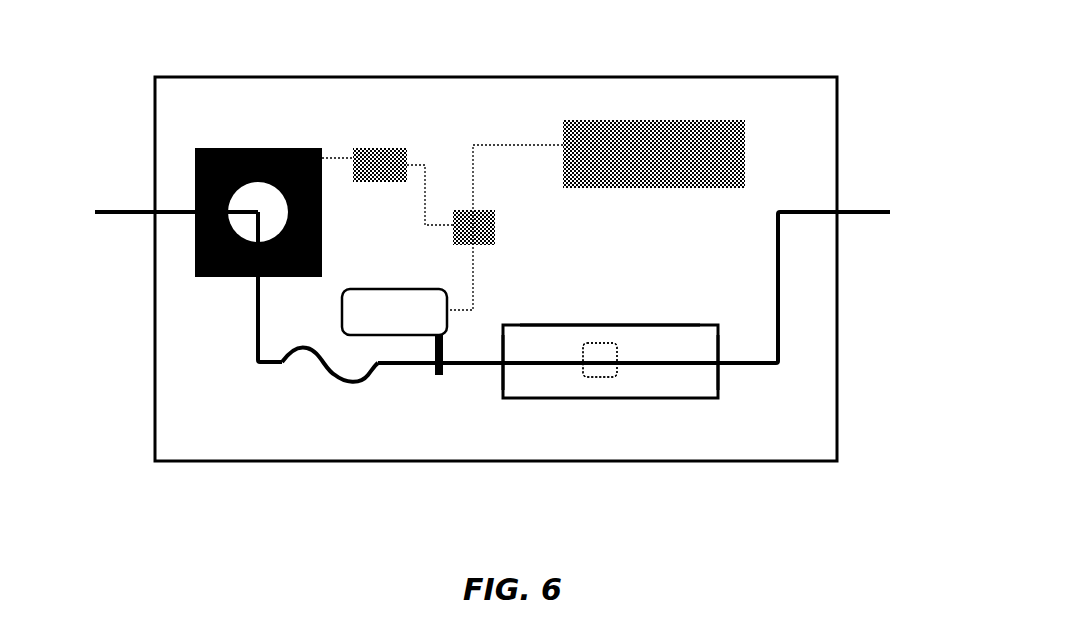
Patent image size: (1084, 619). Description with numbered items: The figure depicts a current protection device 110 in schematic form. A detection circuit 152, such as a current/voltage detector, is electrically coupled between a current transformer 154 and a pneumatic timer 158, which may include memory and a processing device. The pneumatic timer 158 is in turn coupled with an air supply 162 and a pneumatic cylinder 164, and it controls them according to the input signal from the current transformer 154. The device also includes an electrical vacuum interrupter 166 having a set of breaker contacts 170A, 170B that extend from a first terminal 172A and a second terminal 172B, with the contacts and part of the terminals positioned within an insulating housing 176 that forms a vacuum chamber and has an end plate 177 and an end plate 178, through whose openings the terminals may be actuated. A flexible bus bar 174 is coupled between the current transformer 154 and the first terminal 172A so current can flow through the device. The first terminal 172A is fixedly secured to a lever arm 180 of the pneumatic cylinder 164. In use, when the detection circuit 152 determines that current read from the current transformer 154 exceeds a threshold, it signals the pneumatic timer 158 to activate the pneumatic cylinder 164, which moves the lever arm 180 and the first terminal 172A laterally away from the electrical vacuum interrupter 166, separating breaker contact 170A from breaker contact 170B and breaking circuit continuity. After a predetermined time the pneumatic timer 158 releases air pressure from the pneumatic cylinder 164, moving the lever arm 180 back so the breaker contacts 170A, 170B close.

The current protection device 110 is at (263, 71).
The detection circuit 152 is at (383, 148).
The current transformer 154 is at (205, 148).
The pneumatic timer 158 is at (495, 225).
The air supply 162 is at (620, 120).
The pneumatic cylinder 164 is at (385, 292).
The electrical vacuum interrupter 166 is at (620, 332).
The breaker contact 170A is at (575, 370).
The breaker contact 170B is at (618, 368).
The first terminal 172A is at (470, 366).
The second terminal 172B is at (758, 365).
The flexible bus bar 174 is at (333, 368).
The housing 176 is at (672, 325).
The end plate 177 is at (502, 336).
The end plate 178 is at (718, 338).
The lever arm 180 is at (438, 376).